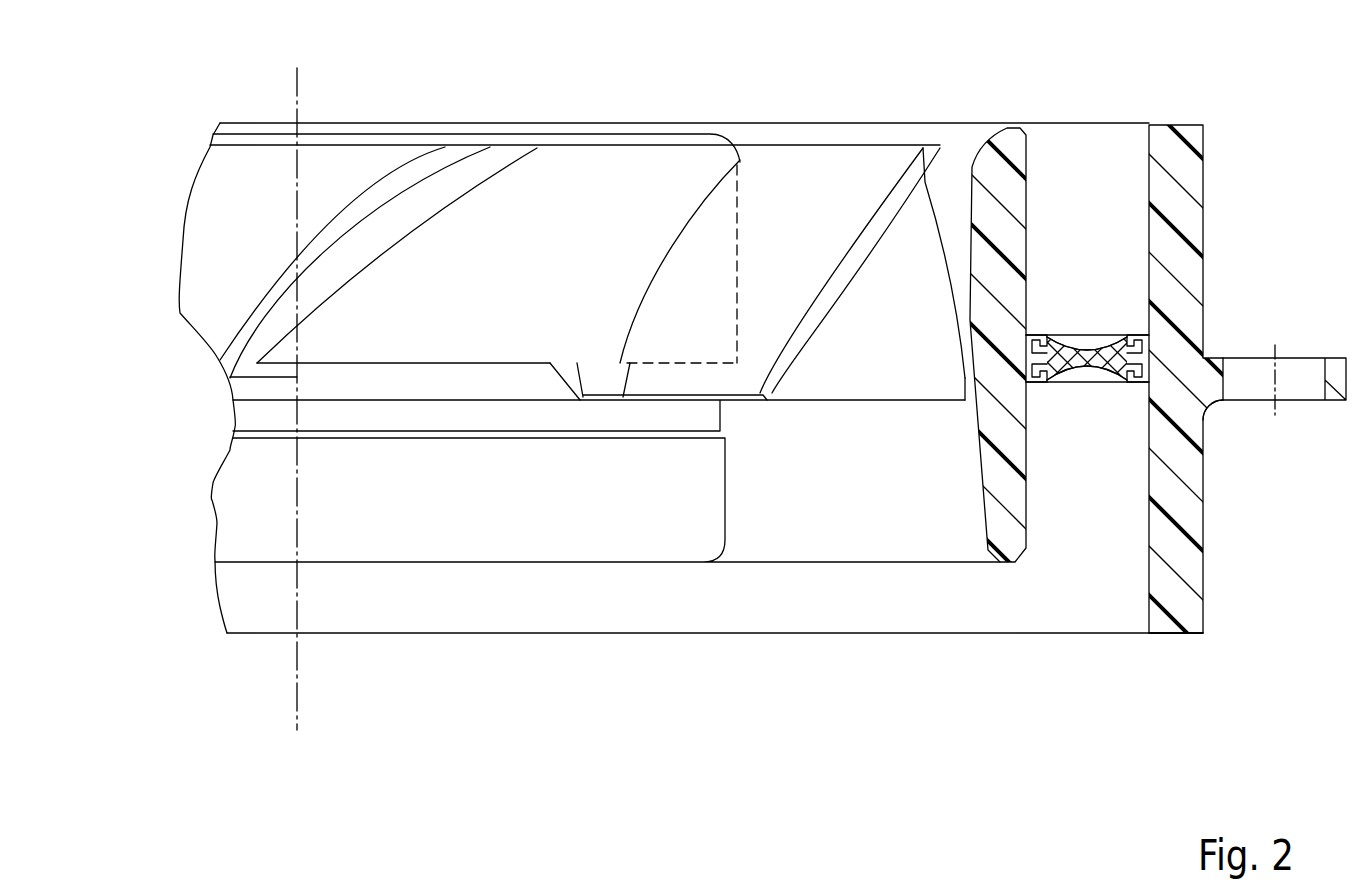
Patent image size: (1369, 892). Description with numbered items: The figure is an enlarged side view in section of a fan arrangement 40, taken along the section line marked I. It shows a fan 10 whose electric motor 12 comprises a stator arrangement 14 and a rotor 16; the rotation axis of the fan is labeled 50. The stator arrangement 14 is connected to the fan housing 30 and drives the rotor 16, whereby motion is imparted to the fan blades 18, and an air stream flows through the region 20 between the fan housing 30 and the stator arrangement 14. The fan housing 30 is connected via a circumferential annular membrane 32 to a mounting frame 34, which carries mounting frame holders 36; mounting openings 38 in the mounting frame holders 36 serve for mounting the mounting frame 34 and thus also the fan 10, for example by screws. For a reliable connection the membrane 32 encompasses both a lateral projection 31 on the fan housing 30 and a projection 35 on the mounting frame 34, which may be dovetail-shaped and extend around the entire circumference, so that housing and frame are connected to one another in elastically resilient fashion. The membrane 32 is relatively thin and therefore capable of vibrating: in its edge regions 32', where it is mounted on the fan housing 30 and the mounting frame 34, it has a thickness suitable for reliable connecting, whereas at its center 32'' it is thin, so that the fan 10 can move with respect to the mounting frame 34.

The fan 10 is at (513, 662).
The electric motor 12 is at (265, 465).
The stator arrangement 14 is at (413, 502).
The rotor 16 is at (613, 146).
The fan blades 18 is at (780, 167).
The region 20 is at (903, 510).
The fan housing 30 is at (990, 170).
The lateral projection 31 is at (1027, 384).
The membrane 32 is at (1087, 362).
The edge regions 32' is at (1094, 273).
The center 32'' is at (1093, 313).
The mounting frame 34 is at (1177, 157).
The projection 35 is at (1132, 383).
The mounting frame holder 36 is at (1215, 357).
The mounting opening 38 is at (1322, 387).
The fan arrangement 40 is at (1103, 664).
The rotation axis 50 is at (297, 100).
The section line marker I is at (407, 686).